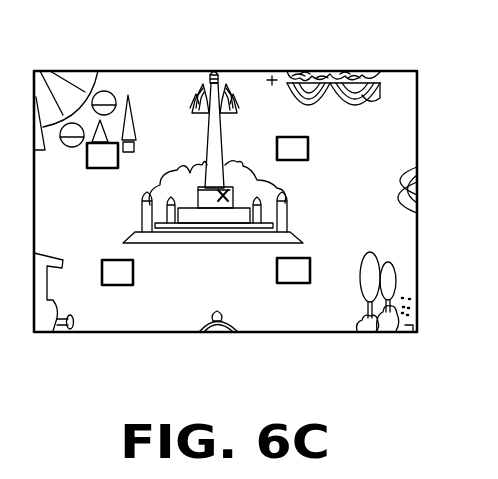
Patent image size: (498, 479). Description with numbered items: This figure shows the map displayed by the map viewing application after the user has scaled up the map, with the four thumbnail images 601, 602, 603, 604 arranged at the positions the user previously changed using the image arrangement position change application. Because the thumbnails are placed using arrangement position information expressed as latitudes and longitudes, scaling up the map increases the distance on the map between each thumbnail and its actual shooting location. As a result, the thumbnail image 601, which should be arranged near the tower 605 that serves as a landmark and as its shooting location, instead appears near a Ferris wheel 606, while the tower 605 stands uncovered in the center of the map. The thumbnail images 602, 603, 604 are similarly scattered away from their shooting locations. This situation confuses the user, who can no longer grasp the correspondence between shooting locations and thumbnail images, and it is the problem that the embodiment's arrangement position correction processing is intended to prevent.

The thumbnail image 601 is at (108, 152).
The thumbnail image 602 is at (288, 150).
The thumbnail image 603 is at (118, 272).
The thumbnail image 604 is at (293, 272).
The tower 605 is at (195, 233).
The Ferris wheel 606 is at (68, 85).